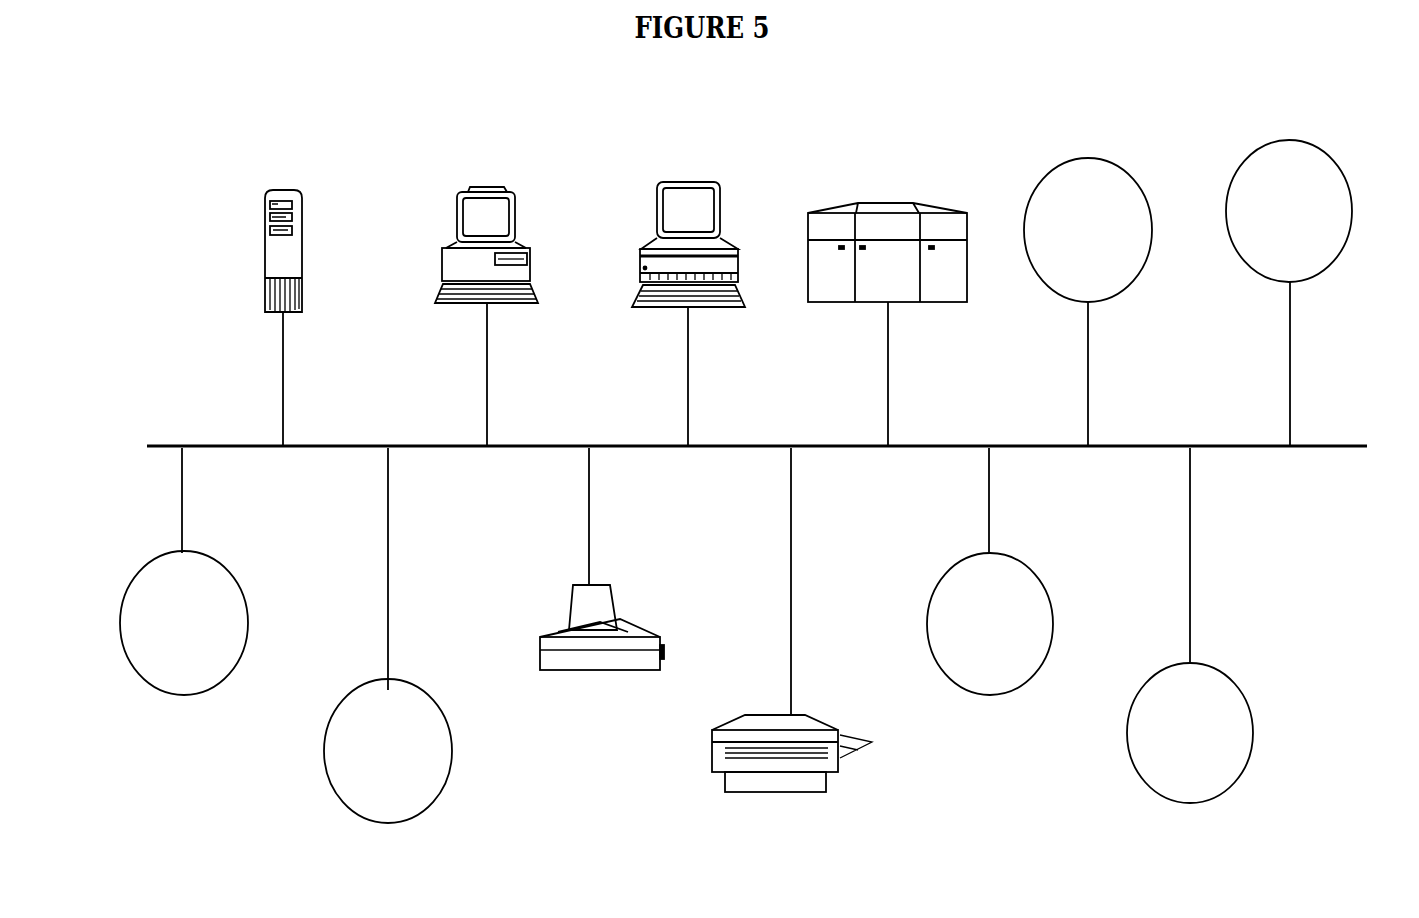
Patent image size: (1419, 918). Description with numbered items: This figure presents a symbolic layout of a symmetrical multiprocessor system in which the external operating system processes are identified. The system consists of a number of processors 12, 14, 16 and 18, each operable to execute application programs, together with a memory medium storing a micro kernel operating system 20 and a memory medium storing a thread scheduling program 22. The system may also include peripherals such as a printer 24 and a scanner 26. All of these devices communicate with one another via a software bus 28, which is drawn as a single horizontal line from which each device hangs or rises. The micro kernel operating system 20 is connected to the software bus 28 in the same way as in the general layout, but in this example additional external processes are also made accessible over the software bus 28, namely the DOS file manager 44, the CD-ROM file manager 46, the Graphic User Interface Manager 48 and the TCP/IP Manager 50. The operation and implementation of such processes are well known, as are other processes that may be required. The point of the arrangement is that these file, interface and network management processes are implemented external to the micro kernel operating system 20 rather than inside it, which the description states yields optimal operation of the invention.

The processor 12 is at (288, 181).
The processor 14 is at (492, 176).
The processor 16 is at (703, 172).
The processor 18 is at (892, 197).
The operating system 20 is at (407, 833).
The thread scheduling program 22 is at (186, 708).
The printer 24 is at (592, 678).
The scanner 26 is at (783, 802).
The software bus 28 is at (198, 433).
The DOS file manager 44 is at (1088, 157).
The CD-ROM file manager 46 is at (1328, 133).
The Graphic User Interface Manager 48 is at (988, 707).
The TCP/IP Manager 50 is at (1245, 772).